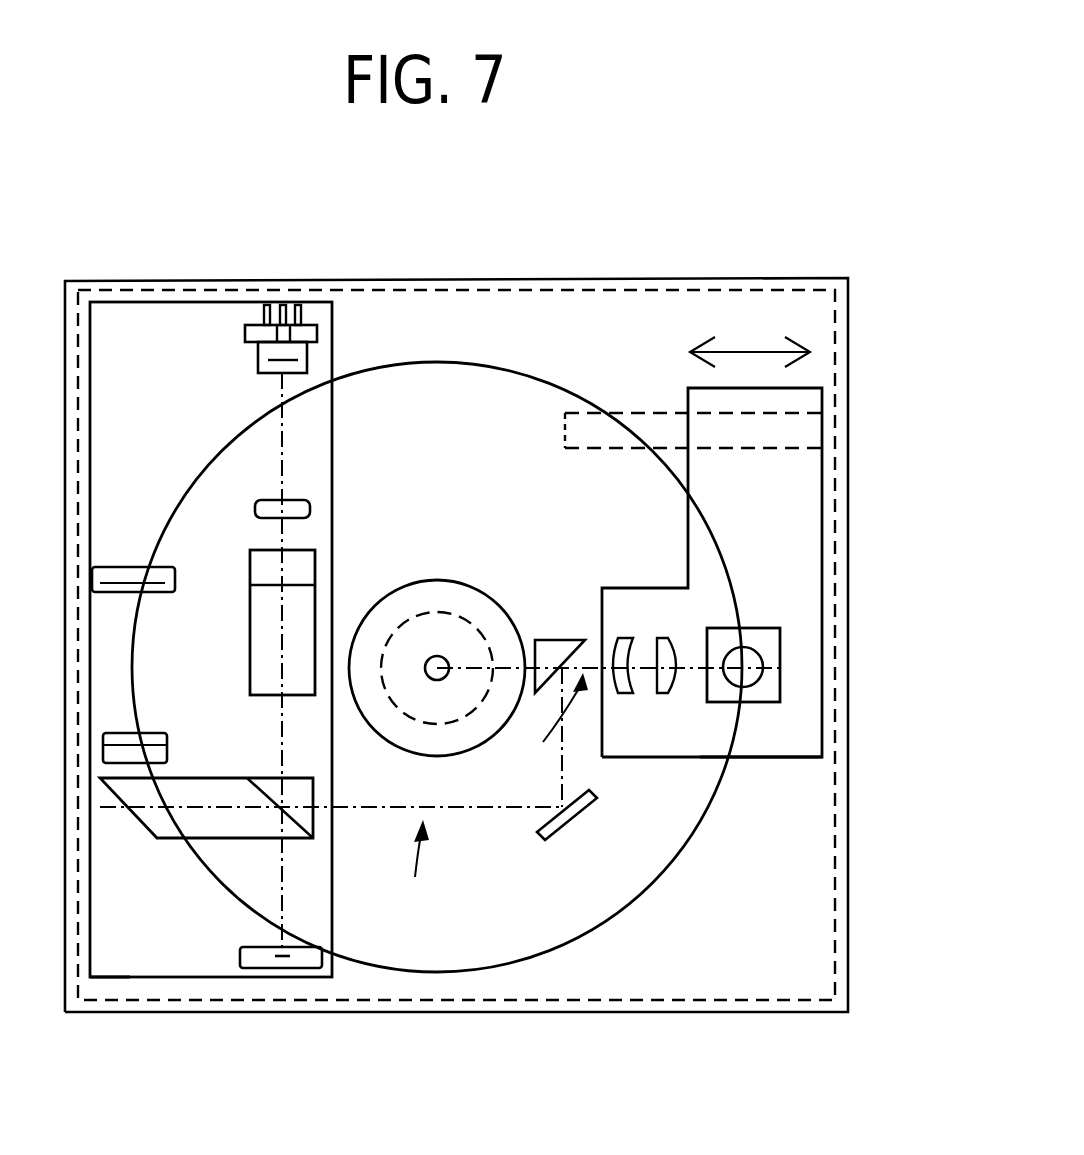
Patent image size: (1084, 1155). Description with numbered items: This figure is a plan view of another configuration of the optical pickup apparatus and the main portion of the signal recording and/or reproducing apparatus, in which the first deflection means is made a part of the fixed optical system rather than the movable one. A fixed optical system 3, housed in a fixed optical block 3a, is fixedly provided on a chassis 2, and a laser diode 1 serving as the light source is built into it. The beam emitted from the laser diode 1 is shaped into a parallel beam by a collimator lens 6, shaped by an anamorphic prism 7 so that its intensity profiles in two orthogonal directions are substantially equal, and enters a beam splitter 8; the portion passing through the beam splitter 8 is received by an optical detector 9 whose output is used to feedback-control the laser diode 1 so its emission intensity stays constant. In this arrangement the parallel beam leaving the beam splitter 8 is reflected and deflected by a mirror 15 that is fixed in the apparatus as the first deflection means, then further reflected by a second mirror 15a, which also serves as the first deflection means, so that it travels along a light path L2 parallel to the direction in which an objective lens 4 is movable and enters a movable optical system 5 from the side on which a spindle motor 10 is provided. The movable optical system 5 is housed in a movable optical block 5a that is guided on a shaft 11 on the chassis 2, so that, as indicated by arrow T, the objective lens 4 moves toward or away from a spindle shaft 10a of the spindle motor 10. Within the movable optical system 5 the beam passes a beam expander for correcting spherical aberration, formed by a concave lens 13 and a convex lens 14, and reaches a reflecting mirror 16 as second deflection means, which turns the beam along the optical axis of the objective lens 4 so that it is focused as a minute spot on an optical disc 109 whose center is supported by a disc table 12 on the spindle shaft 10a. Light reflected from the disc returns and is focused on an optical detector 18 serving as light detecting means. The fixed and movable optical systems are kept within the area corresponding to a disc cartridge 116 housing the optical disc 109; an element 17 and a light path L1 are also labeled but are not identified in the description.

The laser diode 1 is at (313, 327).
The chassis 2 is at (843, 338).
The fixed optical system 3 is at (183, 940).
The fixed optical block 3a is at (113, 977).
The objective lens 4 is at (775, 672).
The movable optical system 5 is at (783, 735).
The movable optical block 5a is at (753, 762).
The collimator lens 6 is at (262, 502).
The anamorphic prism 7 is at (250, 637).
The beam splitter 8 is at (157, 836).
The optical detector 9 is at (293, 968).
The spindle motor 10 is at (440, 582).
The spindle shaft 10a is at (440, 665).
The shaft 11 is at (655, 422).
The disc table 12 is at (445, 630).
The concave lens 13 is at (628, 697).
The convex lens 14 is at (675, 680).
The mirror 15 is at (547, 838).
The second mirror 15a is at (557, 637).
The reflecting mirror 16 is at (782, 633).
The lens 17 is at (140, 732).
The optical detector 18 is at (120, 563).
The optical disc 109 is at (532, 410).
The disc cartridge 116 is at (523, 645).
The light beam L1 is at (413, 880).
The light path L2 is at (540, 736).
The arrow T is at (750, 331).